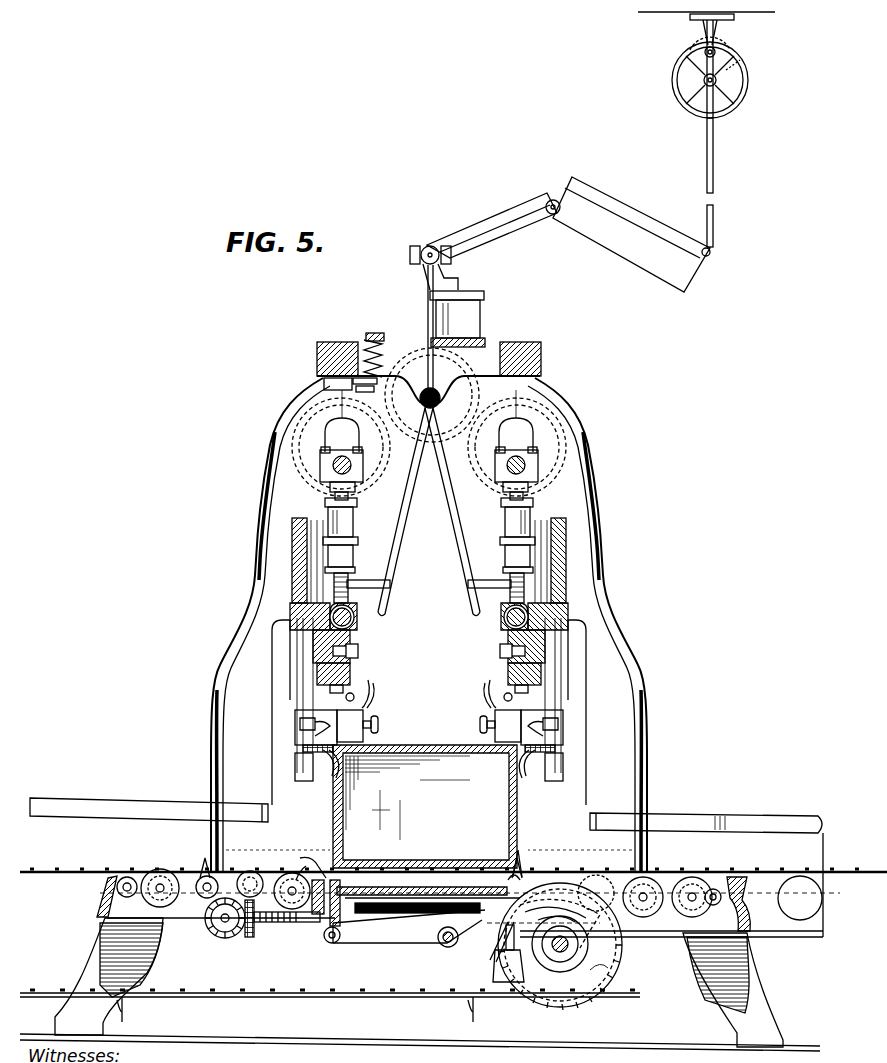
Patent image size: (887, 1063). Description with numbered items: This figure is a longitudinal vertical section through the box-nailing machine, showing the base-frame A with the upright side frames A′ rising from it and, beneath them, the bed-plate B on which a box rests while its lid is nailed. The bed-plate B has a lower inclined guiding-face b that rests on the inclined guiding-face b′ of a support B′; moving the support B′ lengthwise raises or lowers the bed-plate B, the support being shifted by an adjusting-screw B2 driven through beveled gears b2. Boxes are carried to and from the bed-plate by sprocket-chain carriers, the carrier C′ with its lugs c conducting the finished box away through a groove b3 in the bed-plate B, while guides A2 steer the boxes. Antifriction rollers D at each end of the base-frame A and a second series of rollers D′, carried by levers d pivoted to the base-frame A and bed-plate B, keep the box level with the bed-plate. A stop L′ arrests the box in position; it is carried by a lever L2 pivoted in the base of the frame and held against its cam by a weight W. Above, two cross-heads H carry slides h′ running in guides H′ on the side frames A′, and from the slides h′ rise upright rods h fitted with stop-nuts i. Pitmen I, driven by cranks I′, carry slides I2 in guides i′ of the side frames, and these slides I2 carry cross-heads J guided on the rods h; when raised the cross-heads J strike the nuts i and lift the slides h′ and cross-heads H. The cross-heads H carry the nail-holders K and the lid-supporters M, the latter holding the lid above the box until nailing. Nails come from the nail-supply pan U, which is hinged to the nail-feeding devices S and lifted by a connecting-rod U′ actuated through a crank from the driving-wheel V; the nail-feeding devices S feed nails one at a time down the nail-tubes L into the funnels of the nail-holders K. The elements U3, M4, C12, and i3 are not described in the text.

The driving-wheel V is at (748, 88).
The pinion U3 is at (732, 44).
The connecting-rod U′ is at (716, 157).
The nail-supply pan U is at (626, 222).
The nail-feeding devices S is at (492, 200).
The nail-tubes L is at (430, 320).
The cranks I′ is at (429, 445).
The pitmen I is at (366, 519).
The stop-nuts i is at (367, 582).
The slides I2 is at (366, 622).
The upright side frames A′ is at (242, 552).
The cross-heads J is at (352, 672).
The upright rods h is at (383, 680).
The guides H′ is at (300, 683).
The cross-heads H is at (296, 724).
The lid-supporters M is at (429, 731).
The nail-holders K is at (426, 730).
The lever M4 is at (423, 770).
The slides h′ is at (305, 786).
The bed-plate B is at (318, 840).
The groove b3 is at (314, 850).
The lower inclined guiding-face b is at (519, 858).
The carrier C′ is at (55, 868).
The base-frame A is at (745, 868).
The antifriction-rollers D′ is at (153, 873).
The antifriction rollers D is at (800, 888).
The levers d is at (185, 888).
The carrying lugs c is at (487, 1013).
The guides A2 is at (143, 810).
The adjusting-screw B2 is at (260, 932).
The beveled gears b2 is at (208, 938).
The support B′ is at (322, 938).
The stop L′ is at (298, 936).
The lever L2 is at (403, 942).
The gear wheel C12 is at (610, 988).
The hub i3 is at (584, 940).
The guides i′ is at (556, 965).
The inclined guiding-face b′ is at (496, 943).
The weight W is at (496, 972).